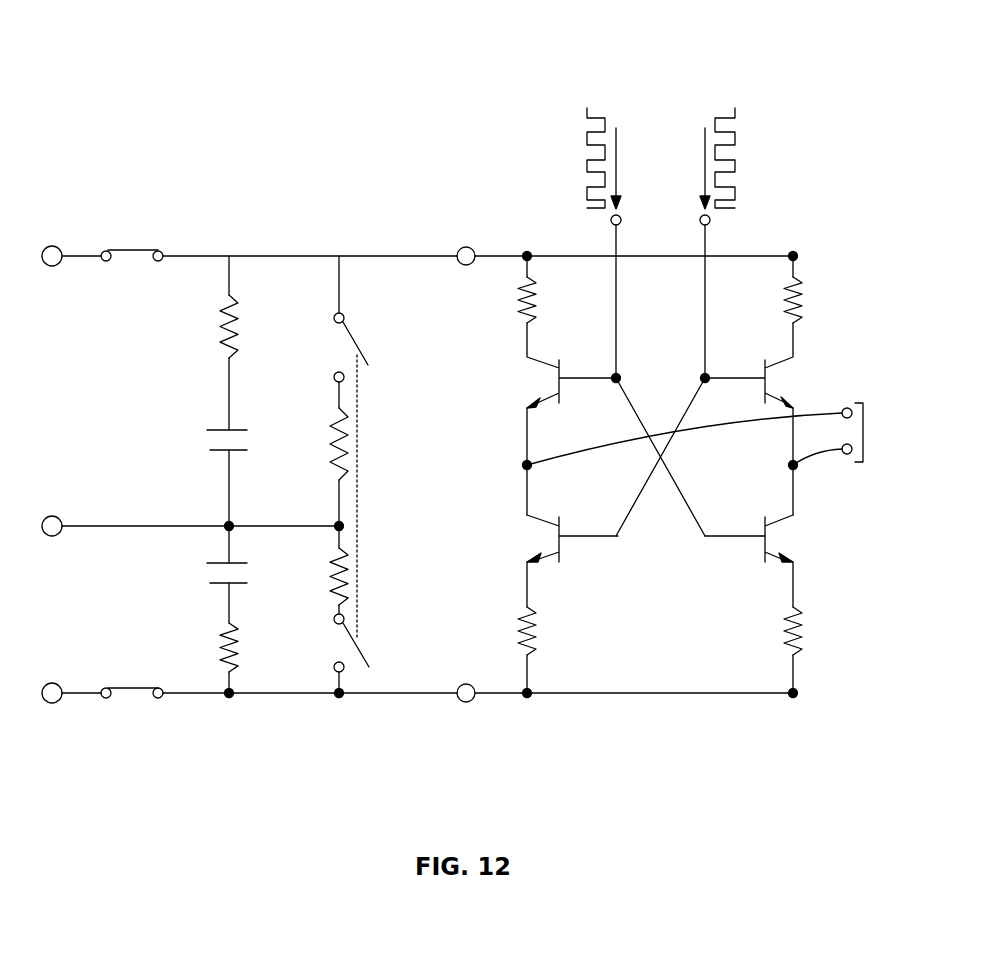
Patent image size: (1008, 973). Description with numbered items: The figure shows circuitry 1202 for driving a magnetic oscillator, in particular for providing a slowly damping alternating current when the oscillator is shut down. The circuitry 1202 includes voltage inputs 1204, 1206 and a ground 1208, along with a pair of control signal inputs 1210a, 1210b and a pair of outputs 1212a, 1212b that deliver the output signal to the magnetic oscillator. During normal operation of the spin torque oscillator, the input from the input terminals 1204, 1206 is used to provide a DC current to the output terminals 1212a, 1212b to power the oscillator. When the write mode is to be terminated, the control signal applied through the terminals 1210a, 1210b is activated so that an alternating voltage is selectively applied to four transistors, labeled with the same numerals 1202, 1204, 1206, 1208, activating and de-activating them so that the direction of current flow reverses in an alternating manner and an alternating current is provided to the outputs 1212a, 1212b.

The circuitry 1202 is at (238, 126).
The voltage input 1204 is at (63, 253).
The voltage input 1206 is at (60, 685).
The ground 1208 is at (61, 518).
The control signal input 1210a is at (619, 138).
The control signal input 1210b is at (702, 184).
The output terminal 1212a is at (841, 409).
The output terminal 1212b is at (842, 453).